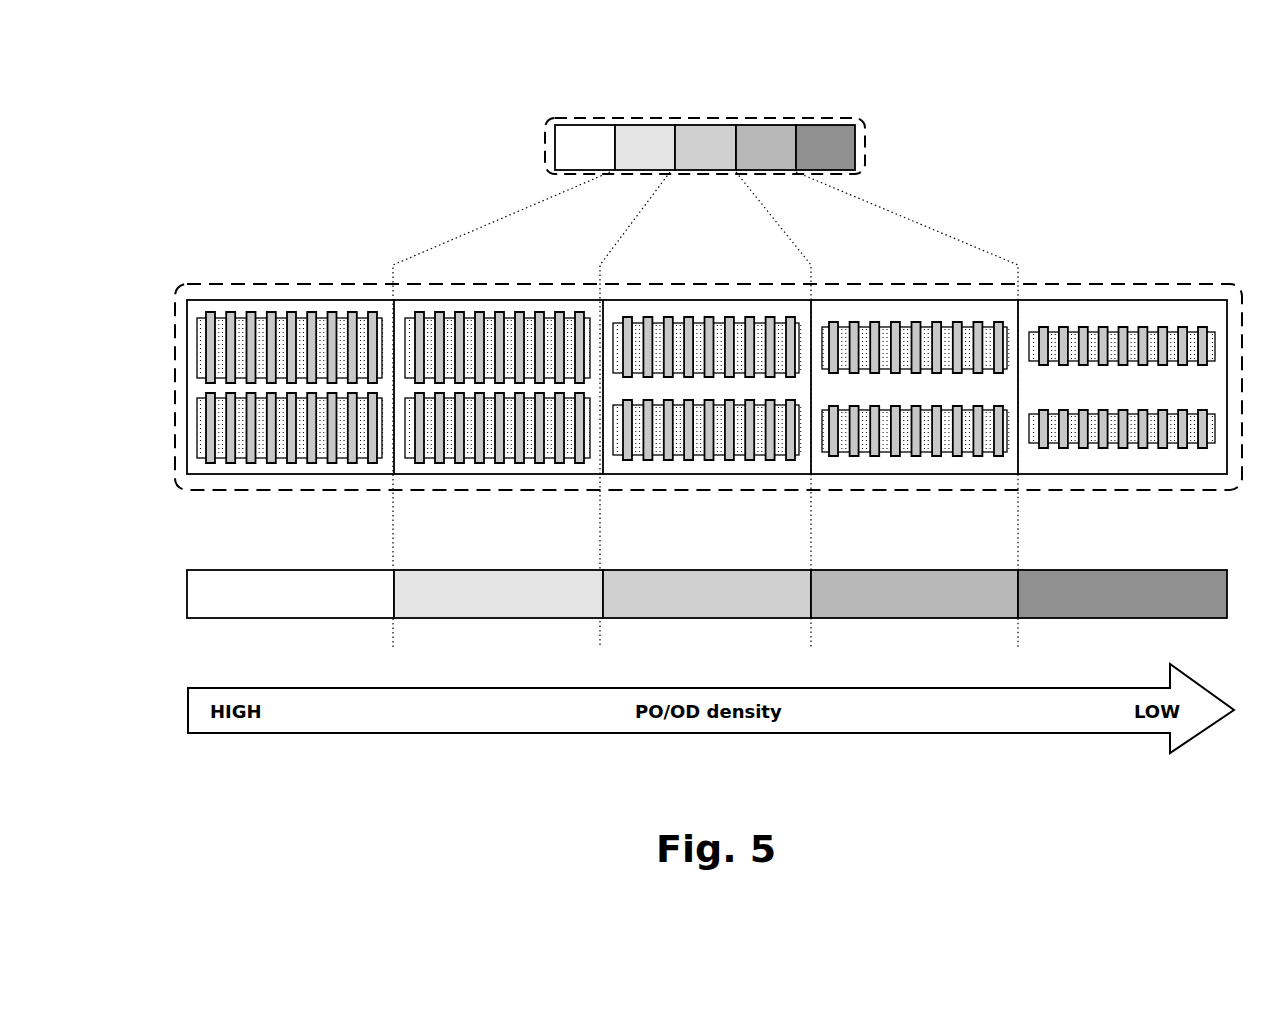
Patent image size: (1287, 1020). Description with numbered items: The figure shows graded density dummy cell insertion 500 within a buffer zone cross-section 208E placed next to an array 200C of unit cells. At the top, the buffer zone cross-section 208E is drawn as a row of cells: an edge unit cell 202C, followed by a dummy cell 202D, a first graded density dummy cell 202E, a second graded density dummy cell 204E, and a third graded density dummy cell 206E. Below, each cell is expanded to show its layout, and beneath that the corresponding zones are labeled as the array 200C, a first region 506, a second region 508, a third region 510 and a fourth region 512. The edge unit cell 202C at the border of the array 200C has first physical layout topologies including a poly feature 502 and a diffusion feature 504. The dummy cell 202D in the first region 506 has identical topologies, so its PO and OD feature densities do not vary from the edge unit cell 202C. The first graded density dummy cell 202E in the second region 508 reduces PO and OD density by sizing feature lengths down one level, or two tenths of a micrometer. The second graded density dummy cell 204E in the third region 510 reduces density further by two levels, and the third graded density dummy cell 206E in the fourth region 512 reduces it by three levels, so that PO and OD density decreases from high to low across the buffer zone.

The graded density dummy cell insertion 500 is at (257, 80).
The poly (PO) feature 502 is at (252, 320).
The diffusion (OD) feature 504 is at (280, 320).
The buffer zone cross-section 208E is at (566, 115).
The edge unit cell 202C is at (419, 277).
The dummy cell 202D is at (493, 293).
The first graded density dummy cell 202E is at (676, 293).
The second graded density dummy cell 204E is at (843, 293).
The third graded density dummy cell 206E is at (1109, 293).
The array 200C is at (263, 566).
The first region 506 is at (489, 566).
The second region 508 is at (696, 566).
The third region 510 is at (904, 566).
The fourth region 512 is at (1109, 566).